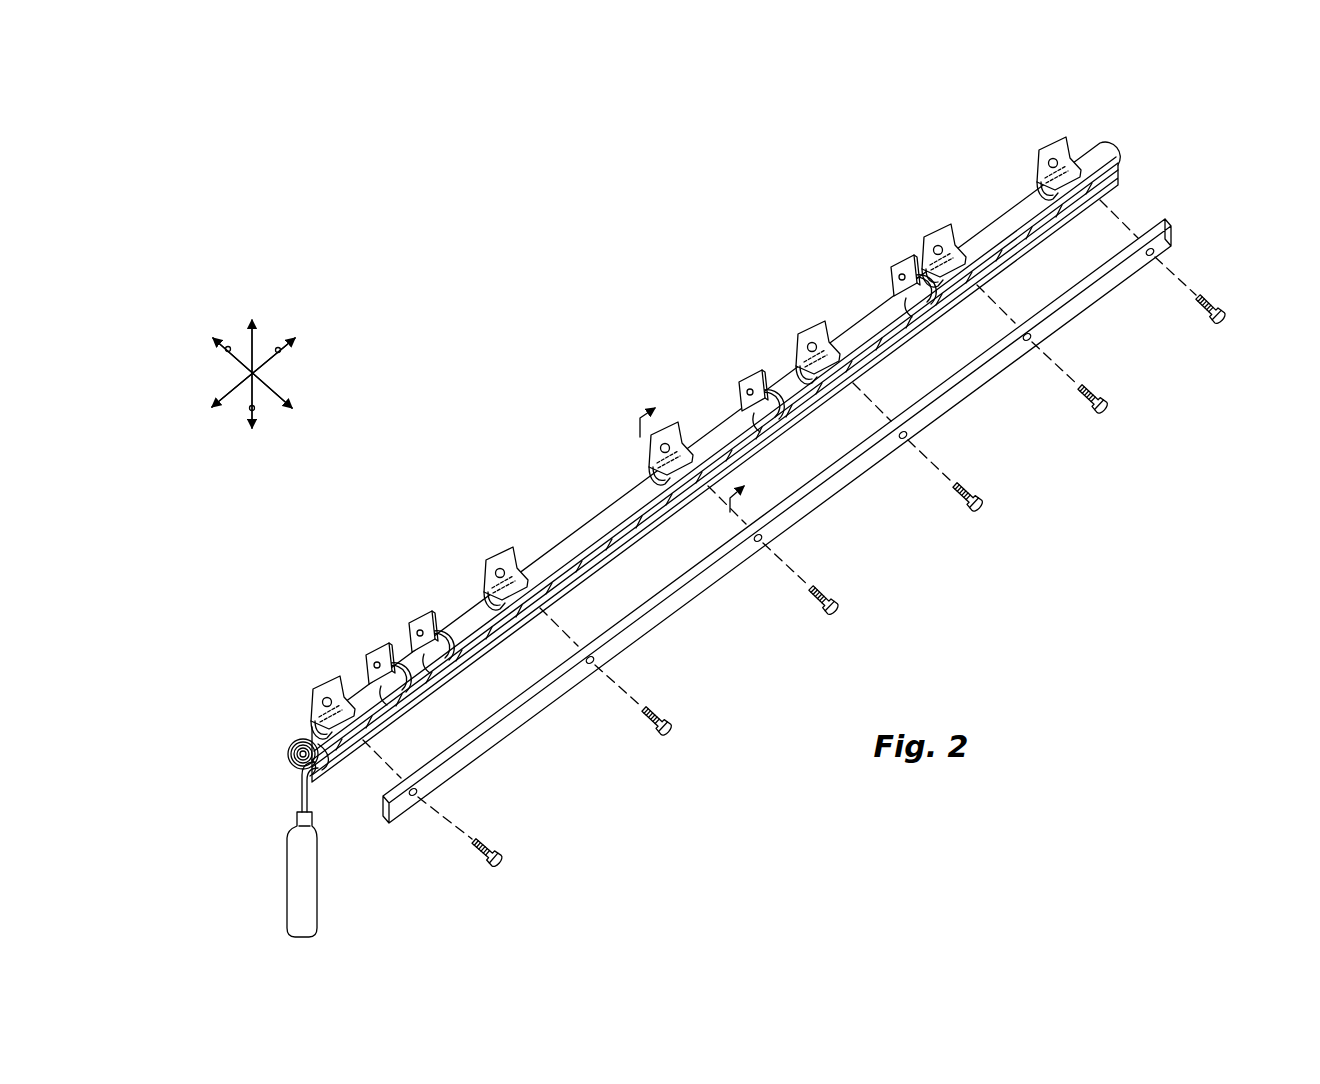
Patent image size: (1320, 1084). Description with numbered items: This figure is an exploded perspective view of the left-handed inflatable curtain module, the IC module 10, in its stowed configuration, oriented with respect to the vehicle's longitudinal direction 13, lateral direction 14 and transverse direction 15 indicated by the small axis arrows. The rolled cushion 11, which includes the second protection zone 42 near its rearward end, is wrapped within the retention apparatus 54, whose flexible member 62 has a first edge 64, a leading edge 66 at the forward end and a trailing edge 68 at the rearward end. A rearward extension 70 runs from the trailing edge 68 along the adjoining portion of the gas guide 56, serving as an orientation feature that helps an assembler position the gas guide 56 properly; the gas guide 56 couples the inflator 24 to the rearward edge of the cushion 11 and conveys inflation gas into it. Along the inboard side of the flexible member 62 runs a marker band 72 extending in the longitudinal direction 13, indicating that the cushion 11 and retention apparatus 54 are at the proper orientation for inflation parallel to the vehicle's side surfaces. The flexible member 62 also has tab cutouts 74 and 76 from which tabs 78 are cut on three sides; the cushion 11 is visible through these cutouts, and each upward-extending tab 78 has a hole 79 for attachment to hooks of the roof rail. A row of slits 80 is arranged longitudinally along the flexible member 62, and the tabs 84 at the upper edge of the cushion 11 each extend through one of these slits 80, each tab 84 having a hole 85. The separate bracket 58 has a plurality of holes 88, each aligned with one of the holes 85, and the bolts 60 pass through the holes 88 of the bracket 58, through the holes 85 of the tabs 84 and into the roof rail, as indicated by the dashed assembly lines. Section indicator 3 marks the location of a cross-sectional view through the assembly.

The section line 3- 3 is at (697, 449).
The IC module 10 is at (571, 293).
The cushion 11 is at (440, 650).
The longitudinal direction 13 is at (270, 348).
The lateral direction 14 is at (272, 387).
The transverse direction 15 is at (247, 343).
The inflator 24 is at (293, 908).
The second protection zone 42 is at (290, 757).
The retention apparatus 54 is at (619, 470).
The gas guide 56 is at (298, 797).
The bracket 58 is at (721, 586).
The bolts 60 is at (1229, 318).
The flexible member 62 is at (740, 486).
The first edge 64 is at (603, 568).
The leading edge 66 is at (1112, 150).
The trailing edge 68 is at (300, 745).
The rearward extension 70 is at (330, 757).
The marker band 72 is at (863, 353).
The tab cutout 74 is at (390, 766).
The tab cutout 76 is at (757, 413).
The tabs 78 is at (387, 630).
The hole 79 is at (368, 640).
The slits 80 is at (313, 727).
The tabs 84 is at (310, 677).
The hole 85 is at (332, 683).
The holes 88 is at (1152, 250).